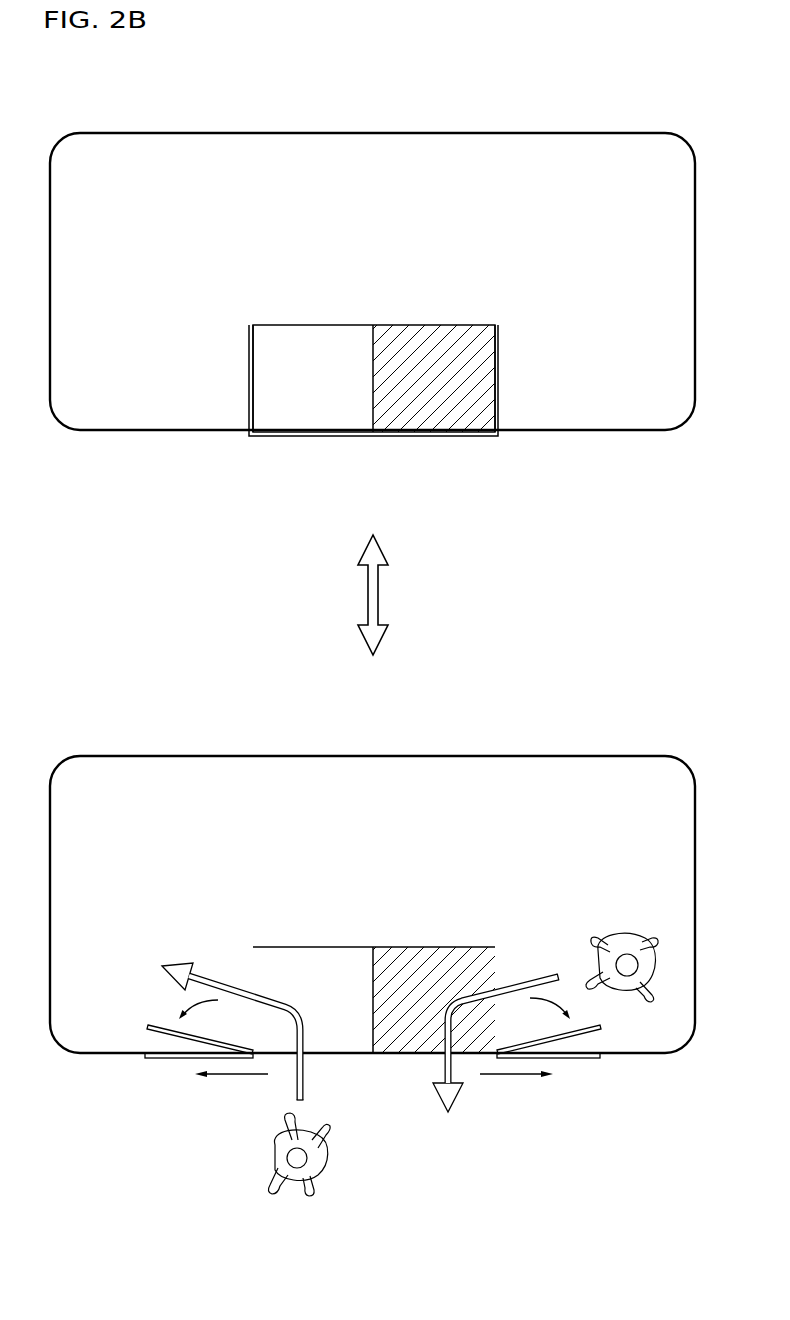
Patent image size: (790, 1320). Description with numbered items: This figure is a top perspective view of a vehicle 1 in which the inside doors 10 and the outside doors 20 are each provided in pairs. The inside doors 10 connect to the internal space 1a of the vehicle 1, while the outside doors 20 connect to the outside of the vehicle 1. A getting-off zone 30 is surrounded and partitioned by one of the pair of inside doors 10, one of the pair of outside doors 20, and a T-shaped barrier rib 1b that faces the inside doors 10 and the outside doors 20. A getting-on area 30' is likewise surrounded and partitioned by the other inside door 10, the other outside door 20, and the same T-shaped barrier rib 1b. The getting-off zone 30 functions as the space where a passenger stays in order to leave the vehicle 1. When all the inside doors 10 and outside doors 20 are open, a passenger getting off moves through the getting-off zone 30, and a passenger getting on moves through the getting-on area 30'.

The vehicle 1 is at (163, 114).
The internal space 1a is at (329, 214).
The T-shaped barrier rib 1b is at (438, 325).
The inside door 10 is at (249, 395).
The outside door 20 is at (273, 438).
The getting-off zone 30 is at (374, 776).
The getting-on area 30' is at (343, 806).